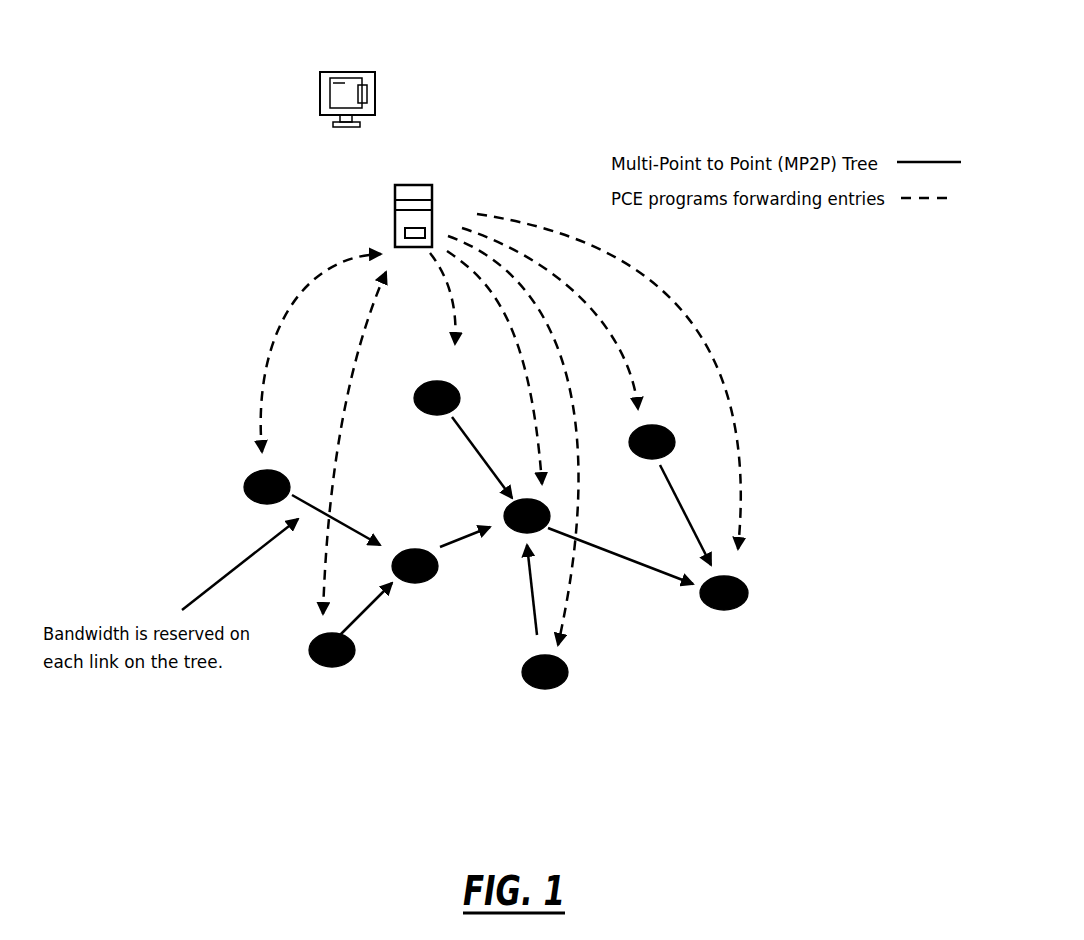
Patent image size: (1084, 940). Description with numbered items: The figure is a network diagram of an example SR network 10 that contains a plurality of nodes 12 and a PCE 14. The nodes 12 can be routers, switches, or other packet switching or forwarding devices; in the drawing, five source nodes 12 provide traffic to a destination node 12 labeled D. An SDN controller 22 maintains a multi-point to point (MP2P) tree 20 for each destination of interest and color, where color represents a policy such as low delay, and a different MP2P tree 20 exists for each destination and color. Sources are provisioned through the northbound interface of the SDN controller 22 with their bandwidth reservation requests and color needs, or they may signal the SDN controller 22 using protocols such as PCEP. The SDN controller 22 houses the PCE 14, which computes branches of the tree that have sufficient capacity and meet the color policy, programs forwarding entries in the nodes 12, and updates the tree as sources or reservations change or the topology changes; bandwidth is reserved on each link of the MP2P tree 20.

The SR network 10 is at (600, 70).
The node 12 is at (756, 566).
The PCE 14 is at (453, 186).
The multi-point to point (MP2P) tree 20 is at (368, 505).
The SDN controller 22 is at (386, 54).